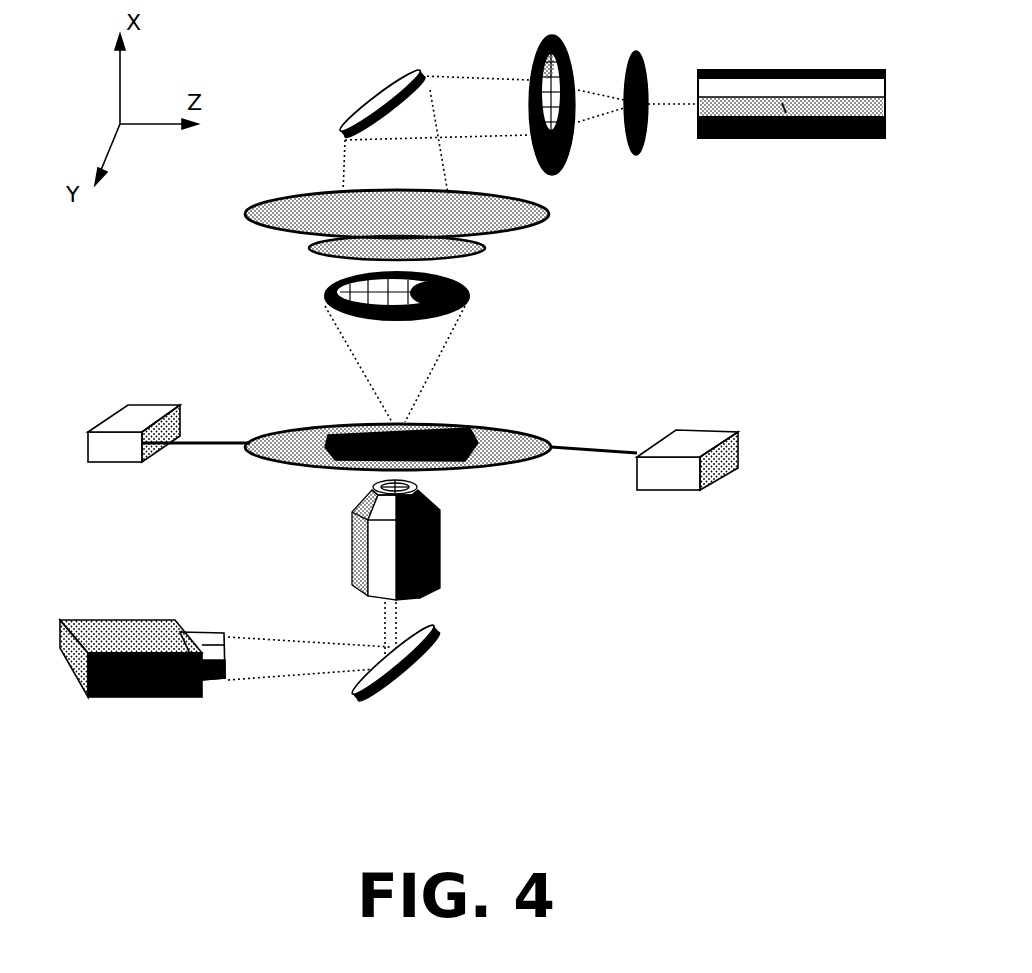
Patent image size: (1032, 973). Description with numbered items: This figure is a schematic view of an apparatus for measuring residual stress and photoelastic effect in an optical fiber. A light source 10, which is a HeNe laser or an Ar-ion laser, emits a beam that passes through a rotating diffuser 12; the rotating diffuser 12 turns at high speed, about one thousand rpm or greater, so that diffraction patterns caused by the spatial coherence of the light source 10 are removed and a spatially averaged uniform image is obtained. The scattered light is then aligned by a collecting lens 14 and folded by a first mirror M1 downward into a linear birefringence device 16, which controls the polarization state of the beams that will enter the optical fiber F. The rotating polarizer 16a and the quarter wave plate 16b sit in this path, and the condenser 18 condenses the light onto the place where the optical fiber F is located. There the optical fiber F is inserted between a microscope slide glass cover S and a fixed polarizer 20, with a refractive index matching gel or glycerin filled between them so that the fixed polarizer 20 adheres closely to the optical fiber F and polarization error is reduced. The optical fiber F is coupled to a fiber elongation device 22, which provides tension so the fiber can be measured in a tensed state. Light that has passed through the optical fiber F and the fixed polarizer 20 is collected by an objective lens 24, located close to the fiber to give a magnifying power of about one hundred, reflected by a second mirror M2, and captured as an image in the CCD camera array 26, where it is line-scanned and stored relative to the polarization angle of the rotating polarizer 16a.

The light source 10 is at (790, 138).
The rotating diffuser 12 is at (636, 156).
The collecting lens 14 is at (560, 173).
The linear birefringence device 16 is at (361, 271).
The rotating polarizer 16a is at (527, 238).
The quarter wave plate 16b is at (473, 258).
The condenser 18 is at (323, 292).
The fixed polarizer 20 is at (500, 432).
The microscope slide glass cover S is at (445, 425).
The optical fiber F is at (597, 450).
The fiber elongation device 22 is at (678, 478).
The objective lens 24 is at (440, 542).
The CCD camera array 26 is at (138, 632).
The first mirror M1 is at (385, 97).
The second mirror M2 is at (432, 645).